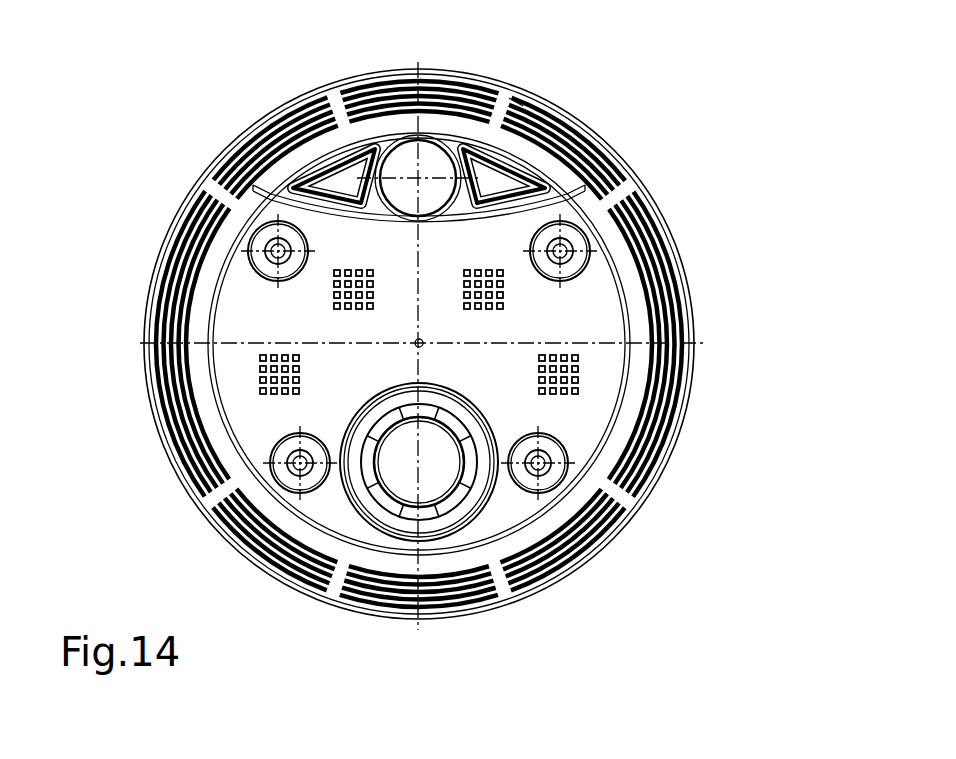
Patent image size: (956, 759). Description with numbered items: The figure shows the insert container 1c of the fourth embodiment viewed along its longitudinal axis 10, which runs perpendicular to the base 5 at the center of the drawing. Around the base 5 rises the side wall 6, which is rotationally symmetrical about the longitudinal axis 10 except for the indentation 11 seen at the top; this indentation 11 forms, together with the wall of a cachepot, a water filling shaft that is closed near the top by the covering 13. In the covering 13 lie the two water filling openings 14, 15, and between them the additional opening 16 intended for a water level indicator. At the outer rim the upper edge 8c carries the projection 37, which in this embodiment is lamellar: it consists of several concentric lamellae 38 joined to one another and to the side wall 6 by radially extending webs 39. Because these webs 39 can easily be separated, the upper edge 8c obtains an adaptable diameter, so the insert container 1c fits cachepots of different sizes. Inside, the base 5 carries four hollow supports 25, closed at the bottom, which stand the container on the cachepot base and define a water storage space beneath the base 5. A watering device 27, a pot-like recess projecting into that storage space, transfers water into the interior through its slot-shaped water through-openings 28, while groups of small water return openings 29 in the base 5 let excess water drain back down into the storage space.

The insert container 1c is at (736, 238).
The upper edge 8c is at (691, 278).
The lamellae 38 is at (618, 172).
The side wall 6 is at (203, 386).
The webs 39 is at (615, 477).
The projection 37 is at (515, 105).
The longitudinal axis 10 is at (423, 343).
The water filling opening 14 is at (332, 172).
The covering 13 is at (367, 168).
The water filling opening 15 is at (487, 162).
The additional opening 16 is at (413, 150).
The indentation 11 is at (553, 198).
The supports 25 is at (258, 243).
The water return openings 29 is at (578, 381).
The base 5 is at (383, 319).
The water through-openings 28 is at (398, 503).
The watering device 27 is at (440, 482).